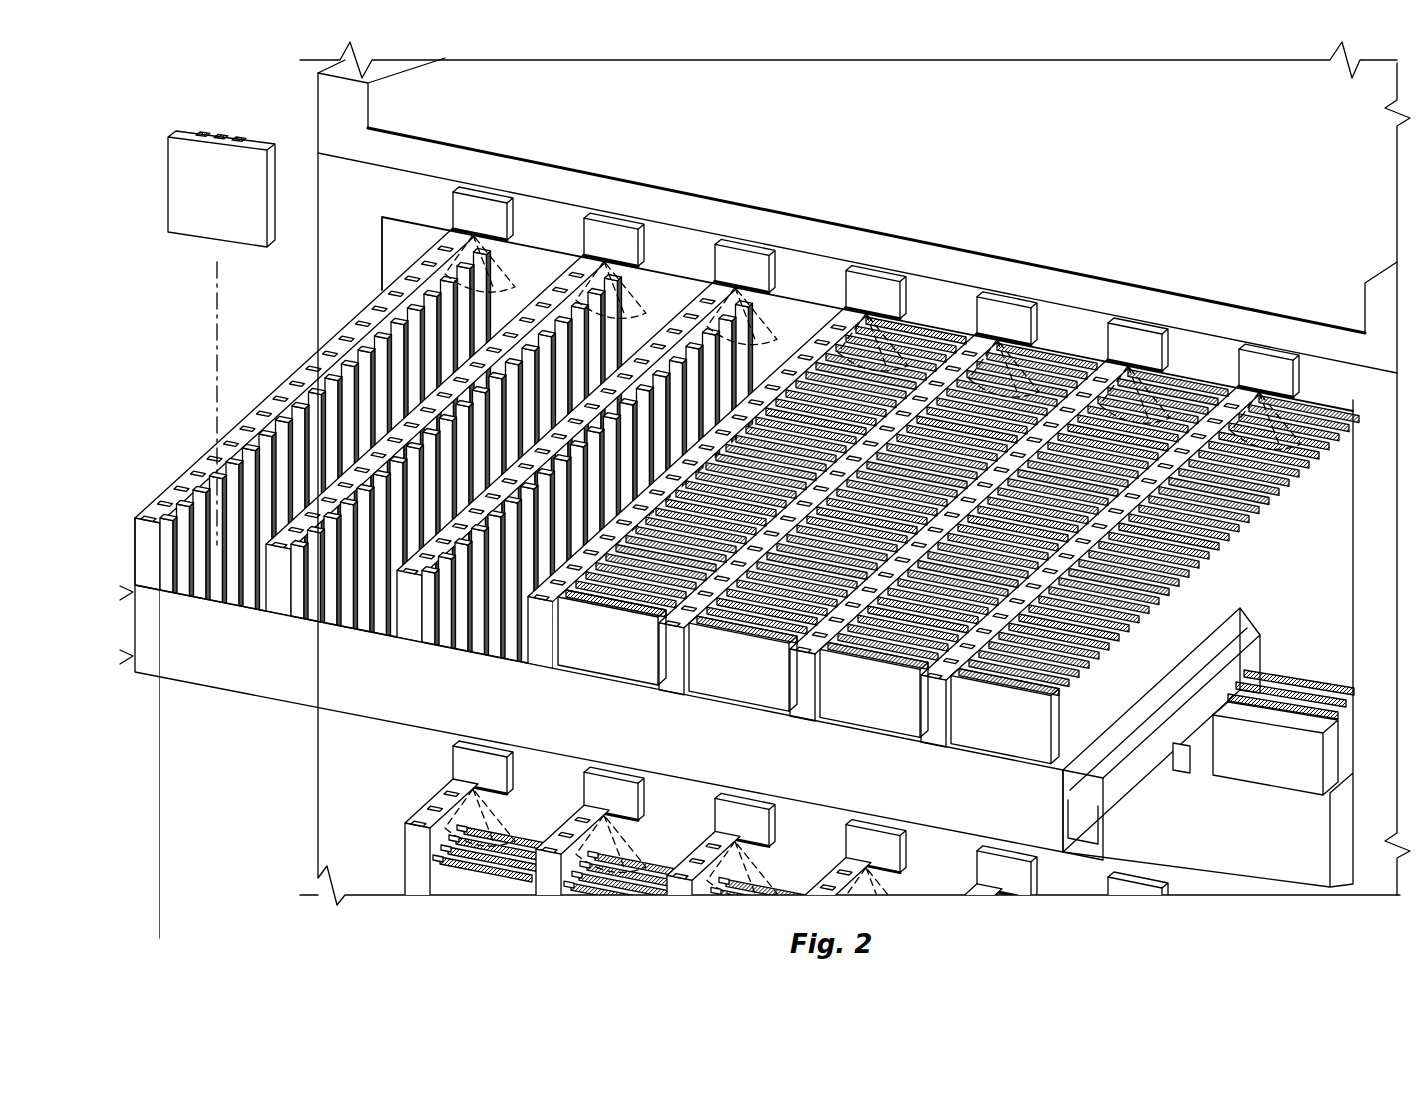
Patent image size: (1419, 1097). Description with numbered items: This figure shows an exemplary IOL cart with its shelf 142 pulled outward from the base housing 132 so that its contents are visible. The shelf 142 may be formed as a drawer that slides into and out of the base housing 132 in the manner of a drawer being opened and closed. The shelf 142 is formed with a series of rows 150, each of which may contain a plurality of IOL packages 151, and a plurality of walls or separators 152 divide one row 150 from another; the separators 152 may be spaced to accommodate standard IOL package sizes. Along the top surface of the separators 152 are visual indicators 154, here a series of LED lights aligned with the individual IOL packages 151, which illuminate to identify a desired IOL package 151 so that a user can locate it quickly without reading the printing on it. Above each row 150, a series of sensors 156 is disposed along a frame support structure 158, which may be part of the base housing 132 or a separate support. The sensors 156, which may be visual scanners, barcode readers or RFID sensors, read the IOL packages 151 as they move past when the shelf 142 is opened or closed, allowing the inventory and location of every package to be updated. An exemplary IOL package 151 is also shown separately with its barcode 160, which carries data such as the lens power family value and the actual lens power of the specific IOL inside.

The base housing 132 is at (312, 815).
The shelf 142 is at (246, 697).
The rows 150 is at (202, 612).
The IOL package 151 is at (251, 134).
The separators 152 is at (370, 304).
The visual indicators 154 is at (195, 466).
The sensors 156 is at (468, 196).
The frame support structure 158 is at (660, 240).
The barcode 160 is at (221, 133).